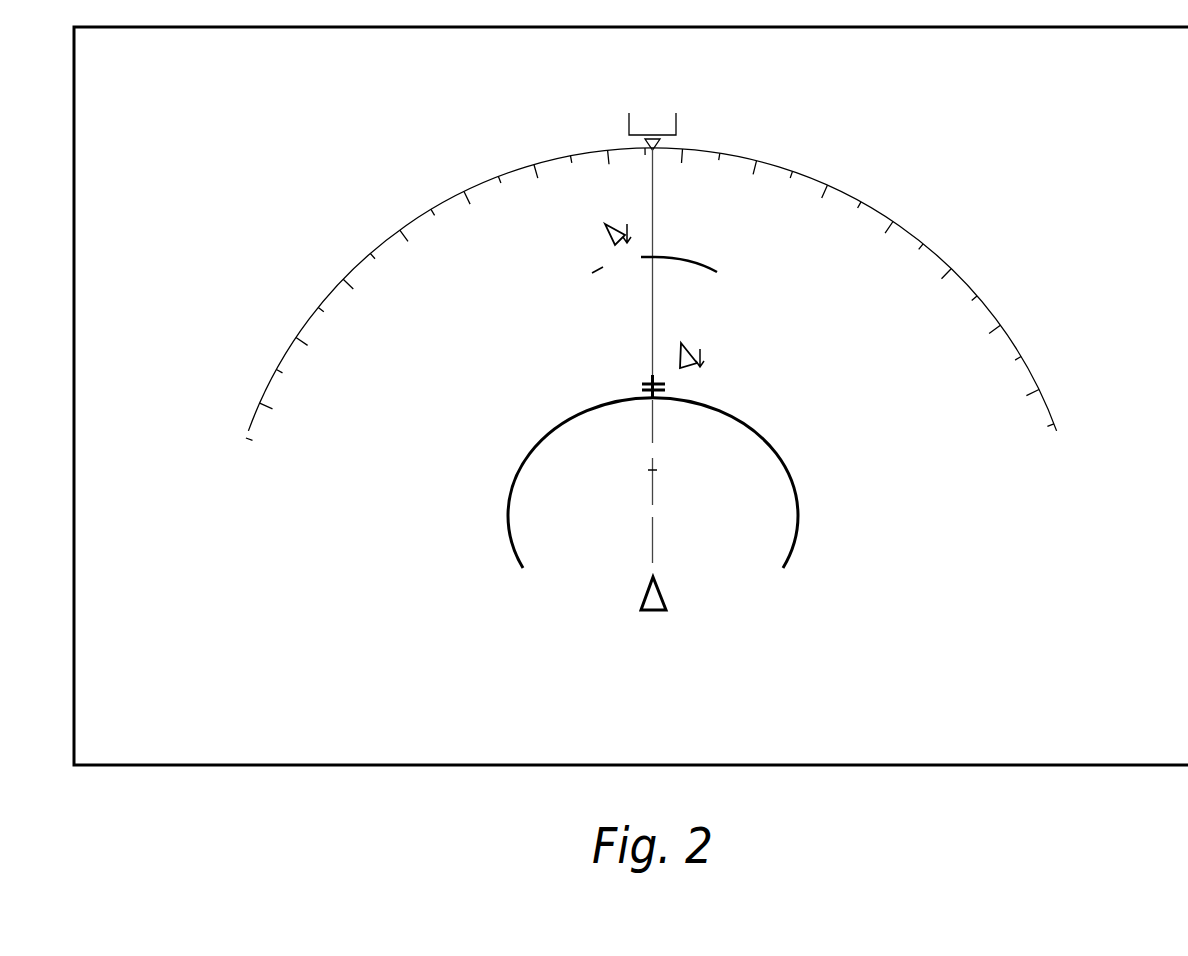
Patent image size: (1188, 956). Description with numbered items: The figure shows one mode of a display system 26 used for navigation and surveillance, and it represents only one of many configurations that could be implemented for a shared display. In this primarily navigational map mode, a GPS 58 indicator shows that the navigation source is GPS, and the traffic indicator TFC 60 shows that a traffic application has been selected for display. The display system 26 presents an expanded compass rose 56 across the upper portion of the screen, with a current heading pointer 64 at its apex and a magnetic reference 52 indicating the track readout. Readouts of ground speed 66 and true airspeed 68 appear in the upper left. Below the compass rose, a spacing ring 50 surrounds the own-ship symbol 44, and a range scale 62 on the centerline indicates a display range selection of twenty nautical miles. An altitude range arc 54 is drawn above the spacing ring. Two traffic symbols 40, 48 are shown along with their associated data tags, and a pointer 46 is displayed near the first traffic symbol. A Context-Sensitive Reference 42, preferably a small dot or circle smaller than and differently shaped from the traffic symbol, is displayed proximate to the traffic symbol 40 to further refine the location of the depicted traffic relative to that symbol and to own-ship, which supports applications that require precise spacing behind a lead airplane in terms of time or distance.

The display system 26 is at (73, 98).
The traffic symbol 40 is at (700, 348).
The context-sensitive reference 42 is at (681, 335).
The own-ship symbol 44 is at (640, 600).
The pointer 46 is at (640, 388).
The traffic symbol 48 is at (604, 238).
The spacing ring 50 is at (785, 457).
The magnetic reference 52 is at (712, 110).
The altitude range arc 54 is at (707, 265).
The expanded compass rose 56 is at (805, 175).
The GPS 58 is at (985, 683).
The traffic indicator TFC 60 is at (245, 648).
The range scale 62 is at (658, 468).
The current heading pointer 64 is at (648, 145).
The ground speed 66 is at (230, 103).
The true airspeed 68 is at (399, 106).